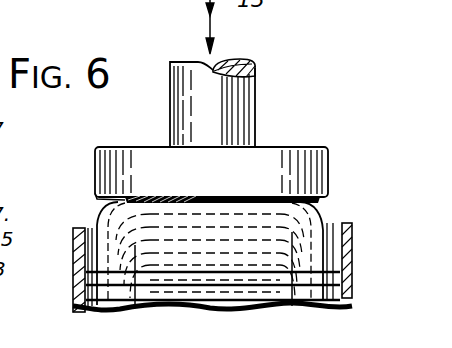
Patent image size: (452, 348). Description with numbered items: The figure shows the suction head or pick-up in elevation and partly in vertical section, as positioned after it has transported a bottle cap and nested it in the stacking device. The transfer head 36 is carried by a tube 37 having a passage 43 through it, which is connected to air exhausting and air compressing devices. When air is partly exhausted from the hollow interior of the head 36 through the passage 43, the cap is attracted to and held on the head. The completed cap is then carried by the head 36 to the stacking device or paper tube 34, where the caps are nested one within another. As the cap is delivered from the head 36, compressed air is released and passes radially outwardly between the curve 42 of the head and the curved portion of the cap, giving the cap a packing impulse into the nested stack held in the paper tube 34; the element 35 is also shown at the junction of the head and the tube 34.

The paper tube 34 is at (356, 248).
The sealing gasket 35 is at (320, 203).
The transfer head 36 is at (146, 147).
The tube 37 is at (256, 112).
The curve of the head 42 is at (112, 203).
The passage 43 is at (225, 64).